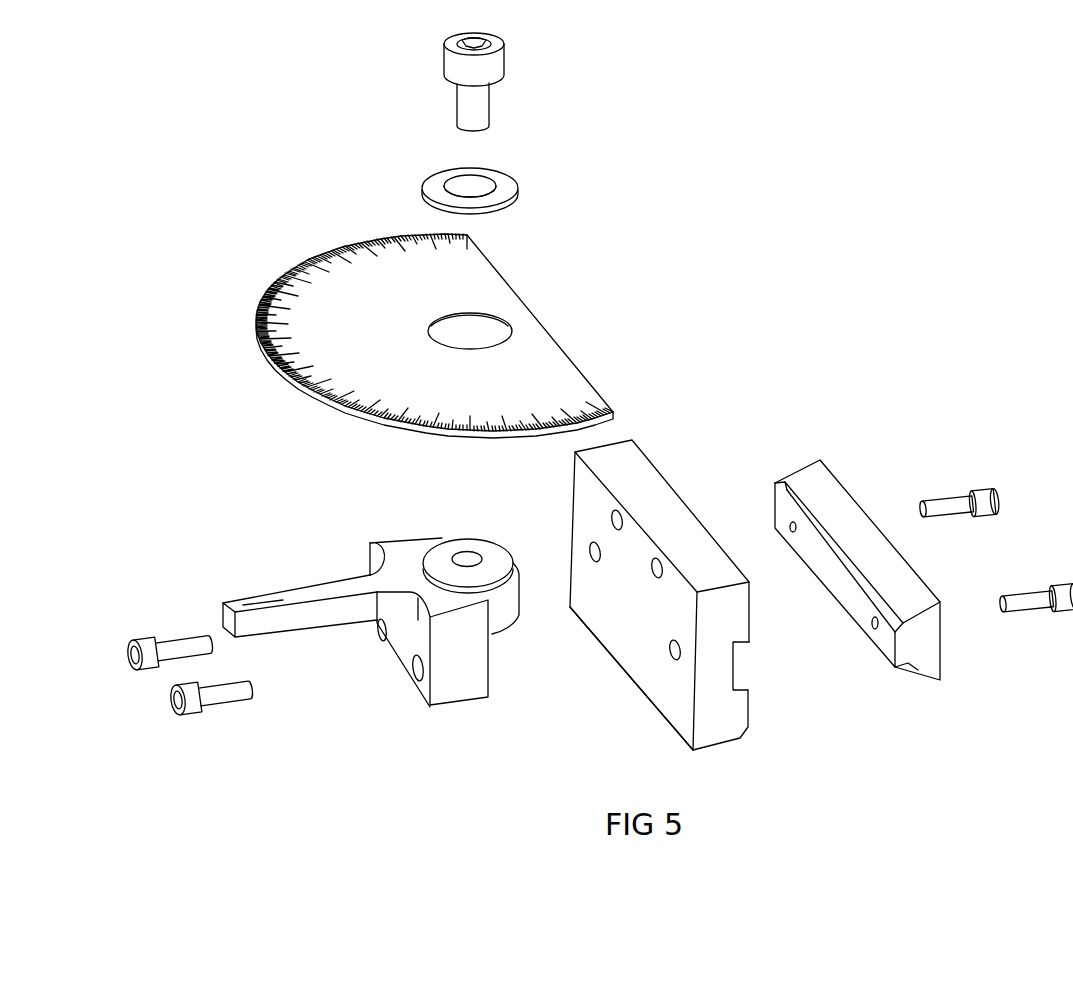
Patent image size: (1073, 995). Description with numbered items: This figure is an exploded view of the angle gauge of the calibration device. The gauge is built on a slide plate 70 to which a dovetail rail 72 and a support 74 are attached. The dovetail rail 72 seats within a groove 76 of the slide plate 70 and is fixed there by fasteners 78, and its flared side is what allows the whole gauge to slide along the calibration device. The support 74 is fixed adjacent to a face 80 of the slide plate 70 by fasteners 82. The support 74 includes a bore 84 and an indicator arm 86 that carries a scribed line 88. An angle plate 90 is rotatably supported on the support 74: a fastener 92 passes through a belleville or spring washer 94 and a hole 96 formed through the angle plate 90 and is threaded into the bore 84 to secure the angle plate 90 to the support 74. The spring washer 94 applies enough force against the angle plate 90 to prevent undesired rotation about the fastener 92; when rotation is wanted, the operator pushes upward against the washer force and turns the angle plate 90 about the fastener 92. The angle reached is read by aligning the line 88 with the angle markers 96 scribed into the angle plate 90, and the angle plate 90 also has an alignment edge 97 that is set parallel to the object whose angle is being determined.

The slide plate 70 is at (690, 581).
The dovetail rail 72 is at (840, 460).
The support 74 is at (361, 592).
The groove 76 is at (733, 668).
The fasteners 78 is at (990, 500).
The face 80 is at (658, 668).
The fasteners 82 is at (170, 706).
The bore 84 is at (467, 556).
The indicator arm 86 is at (310, 622).
The scribed line 88 is at (250, 598).
The angle plate 90 is at (444, 336).
The fastener 92 is at (483, 98).
The spring washer 94 is at (512, 190).
The hole / angle markers 96 is at (500, 265).
The alignment edge 97 is at (572, 353).